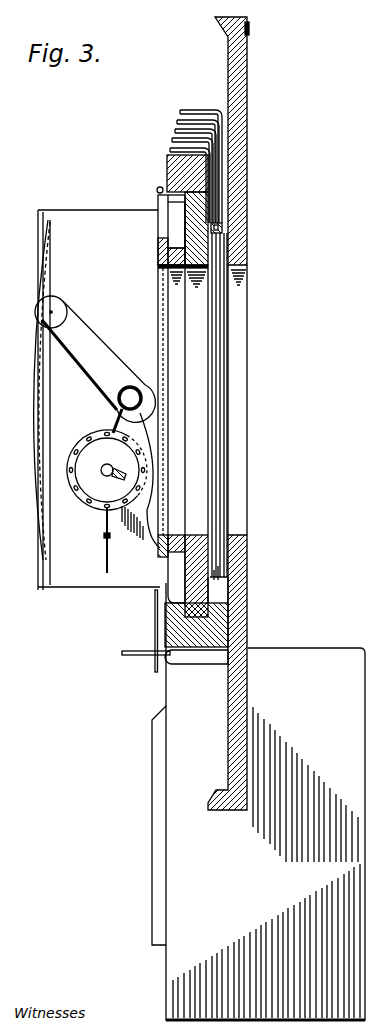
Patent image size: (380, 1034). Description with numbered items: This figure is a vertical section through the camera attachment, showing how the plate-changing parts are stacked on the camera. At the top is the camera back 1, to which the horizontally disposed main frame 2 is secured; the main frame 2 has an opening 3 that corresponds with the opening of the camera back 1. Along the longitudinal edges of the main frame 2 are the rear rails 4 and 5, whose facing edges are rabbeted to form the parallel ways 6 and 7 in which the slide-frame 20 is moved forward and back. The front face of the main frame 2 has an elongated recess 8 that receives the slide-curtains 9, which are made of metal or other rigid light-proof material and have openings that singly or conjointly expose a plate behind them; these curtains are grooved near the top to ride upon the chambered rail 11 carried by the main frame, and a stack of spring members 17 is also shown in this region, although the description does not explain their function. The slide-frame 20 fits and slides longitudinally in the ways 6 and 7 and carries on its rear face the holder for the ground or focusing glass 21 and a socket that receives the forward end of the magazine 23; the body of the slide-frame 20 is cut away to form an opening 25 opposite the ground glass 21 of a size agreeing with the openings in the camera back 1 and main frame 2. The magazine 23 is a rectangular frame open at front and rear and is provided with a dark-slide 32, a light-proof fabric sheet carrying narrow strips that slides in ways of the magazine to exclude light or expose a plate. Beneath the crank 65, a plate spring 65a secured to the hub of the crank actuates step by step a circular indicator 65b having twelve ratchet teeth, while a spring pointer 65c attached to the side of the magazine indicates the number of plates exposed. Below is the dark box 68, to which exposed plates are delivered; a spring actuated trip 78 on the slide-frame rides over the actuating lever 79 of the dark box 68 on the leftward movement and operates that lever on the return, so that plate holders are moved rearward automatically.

The camera back 1 is at (244, 85).
The main frame 2 is at (220, 620).
The opening 3 is at (212, 477).
The rear rail 4 is at (180, 169).
The rear rail 5 is at (200, 633).
The way 6 is at (192, 193).
The way 7 is at (232, 202).
The elongated recess 8 is at (230, 563).
The slide-curtains 9 is at (225, 517).
The chambered rail 11 is at (218, 234).
The leaf springs 17 is at (178, 134).
The slide-frame 20 is at (192, 209).
The ground or focusing glass 21 is at (190, 430).
The magazine 23 is at (75, 312).
The opening 25 is at (205, 367).
The dark-slide 32 is at (47, 560).
The crank 65 is at (102, 360).
The plate spring 65a is at (113, 413).
The circular indicator 65b is at (87, 468).
The spring pointer 65c is at (93, 540).
The dark box 68 is at (258, 801).
The spring actuated trip 78 is at (152, 608).
The actuating lever 79 is at (134, 665).